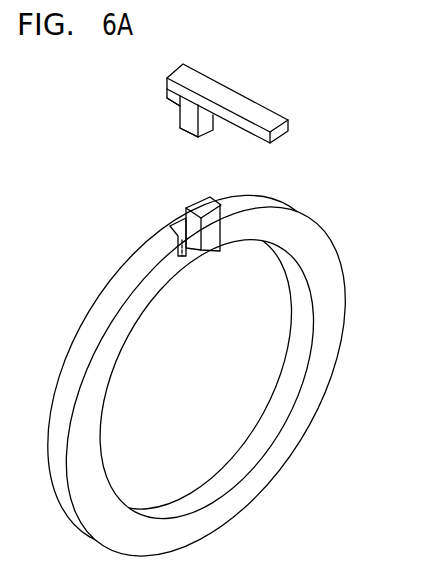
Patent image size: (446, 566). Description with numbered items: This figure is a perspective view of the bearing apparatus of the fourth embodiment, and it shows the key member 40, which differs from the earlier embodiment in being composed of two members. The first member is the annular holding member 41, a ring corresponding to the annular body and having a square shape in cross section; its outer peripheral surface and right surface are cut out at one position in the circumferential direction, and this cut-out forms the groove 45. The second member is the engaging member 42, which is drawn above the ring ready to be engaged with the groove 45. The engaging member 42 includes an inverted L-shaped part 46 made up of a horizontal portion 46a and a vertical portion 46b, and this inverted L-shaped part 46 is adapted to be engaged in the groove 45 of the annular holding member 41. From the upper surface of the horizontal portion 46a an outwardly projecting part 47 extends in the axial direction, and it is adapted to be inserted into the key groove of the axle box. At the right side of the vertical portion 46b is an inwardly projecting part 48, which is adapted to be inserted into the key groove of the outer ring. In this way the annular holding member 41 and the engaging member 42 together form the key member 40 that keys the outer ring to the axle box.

The key member 40 is at (210, 356).
The annular holding member 41 is at (293, 442).
The engaging member 42 is at (216, 119).
The groove 45 is at (226, 206).
The inverted L-shaped part 46 is at (155, 119).
The horizontal portion 46a is at (167, 85).
The vertical portion 46b is at (180, 128).
The outwardly projecting part 47 is at (223, 112).
The inwardly projecting part 48 is at (211, 132).